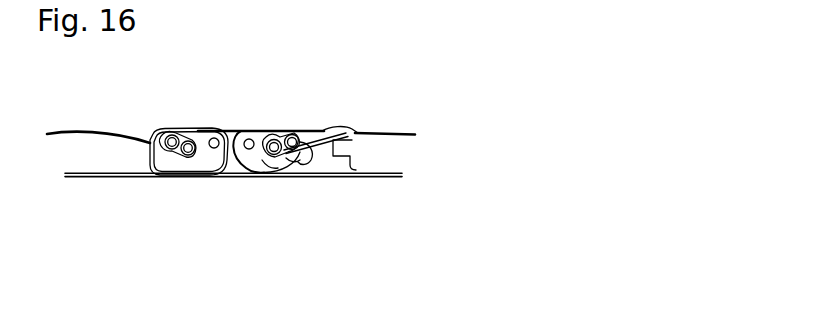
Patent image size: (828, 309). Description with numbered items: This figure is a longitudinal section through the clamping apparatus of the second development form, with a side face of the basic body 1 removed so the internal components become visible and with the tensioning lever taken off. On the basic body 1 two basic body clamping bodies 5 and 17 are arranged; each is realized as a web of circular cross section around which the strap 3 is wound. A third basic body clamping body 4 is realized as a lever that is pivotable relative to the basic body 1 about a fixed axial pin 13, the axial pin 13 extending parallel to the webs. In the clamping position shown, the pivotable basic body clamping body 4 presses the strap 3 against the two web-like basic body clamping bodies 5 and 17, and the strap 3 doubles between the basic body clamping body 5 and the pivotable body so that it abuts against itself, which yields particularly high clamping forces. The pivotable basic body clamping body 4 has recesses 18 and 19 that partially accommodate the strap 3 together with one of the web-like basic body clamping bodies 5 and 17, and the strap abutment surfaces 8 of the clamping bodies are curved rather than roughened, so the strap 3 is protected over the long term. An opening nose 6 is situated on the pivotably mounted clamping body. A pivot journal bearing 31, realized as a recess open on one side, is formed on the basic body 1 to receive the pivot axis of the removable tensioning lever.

The basic body 1 is at (318, 129).
The strap 3 is at (380, 132).
The third basic body clamping body 4 is at (270, 168).
The basic body clamping body 5 is at (290, 134).
The opening nose 6 is at (306, 149).
The strap abutment surface 8 is at (236, 132).
The axial pin 13 is at (248, 138).
The basic body clamping body 17 is at (262, 158).
The recess 18 is at (294, 163).
The recess 19 is at (260, 155).
The pivot journal bearing 31 is at (346, 148).